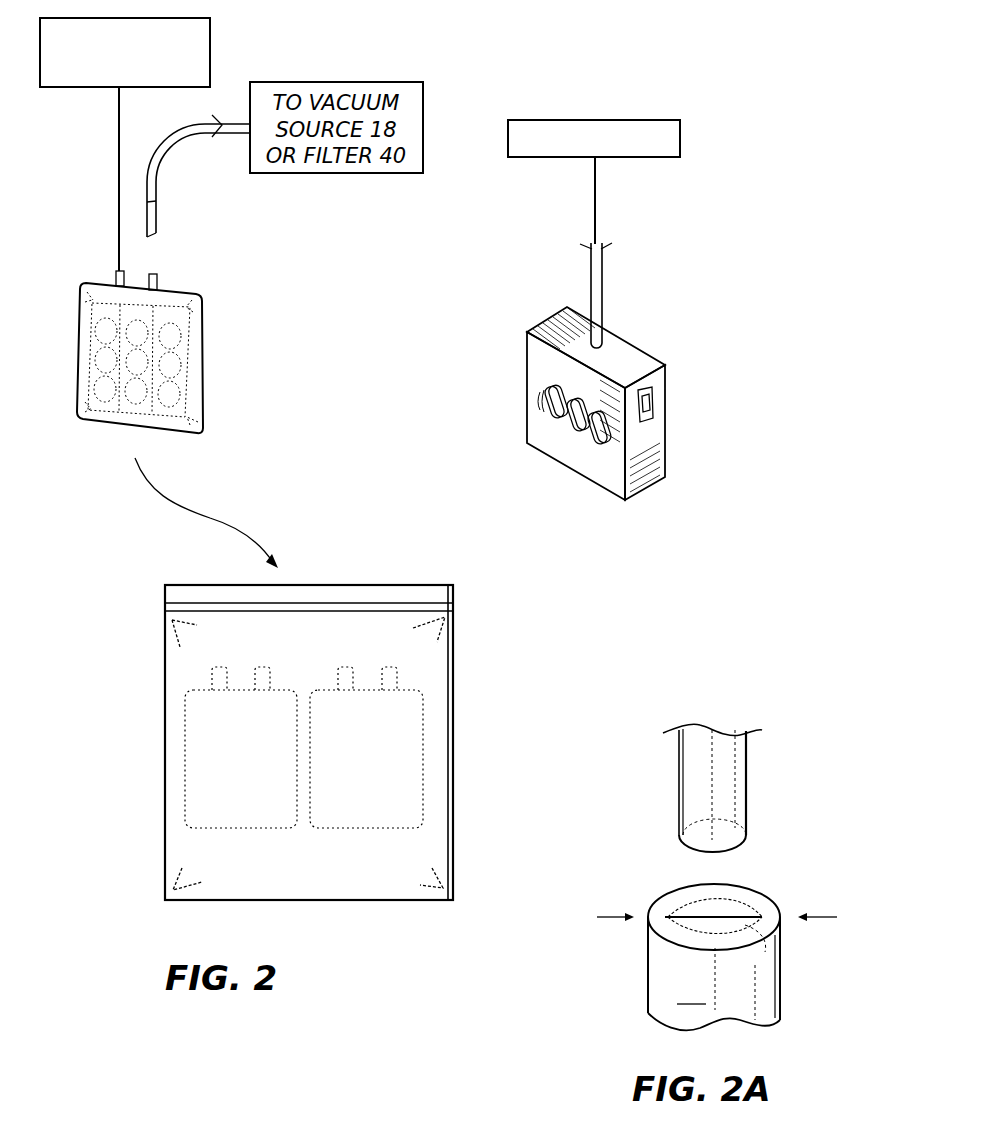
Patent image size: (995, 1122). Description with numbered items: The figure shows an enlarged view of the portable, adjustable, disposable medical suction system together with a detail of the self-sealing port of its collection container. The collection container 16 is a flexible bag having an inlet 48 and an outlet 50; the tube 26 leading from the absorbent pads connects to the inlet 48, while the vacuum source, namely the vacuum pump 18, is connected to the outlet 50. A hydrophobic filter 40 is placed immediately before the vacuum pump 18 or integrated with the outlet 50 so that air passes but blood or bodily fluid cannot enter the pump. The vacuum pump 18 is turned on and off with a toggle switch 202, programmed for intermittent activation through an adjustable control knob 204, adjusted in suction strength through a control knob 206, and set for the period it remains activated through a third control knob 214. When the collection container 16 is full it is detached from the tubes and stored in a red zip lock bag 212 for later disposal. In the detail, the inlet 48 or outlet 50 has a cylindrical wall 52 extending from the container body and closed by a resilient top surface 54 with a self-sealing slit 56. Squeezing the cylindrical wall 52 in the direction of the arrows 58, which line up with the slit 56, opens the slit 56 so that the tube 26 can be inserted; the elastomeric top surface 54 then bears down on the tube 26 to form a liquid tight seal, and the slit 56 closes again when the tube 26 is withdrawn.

In FIG. 2, the collection container 16 is at (280, 316).
In FIG. 2, the vacuum pump 18 is at (480, 400).
In FIG. 2, the tube 26 is at (125, 144).
In FIG. 2A, the tube 26 is at (729, 783).
In FIG. 2, the filter 40 is at (681, 141).
In FIG. 2, the inlet 48 is at (118, 270).
In FIG. 2A, the inlet 48 is at (767, 957).
In FIG. 2, the outlet 50 is at (160, 280).
In FIG. 2A, the outlet 50 is at (767, 957).
In FIG. 2A, the cylindrical wall 52 is at (692, 992).
In FIG. 2A, the top surface 54 is at (760, 936).
In FIG. 2A, the self-sealing slit 56 is at (753, 912).
In FIG. 2A, the arrows 58 is at (600, 917).
In FIG. 2, the toggle switch 202 is at (654, 399).
In FIG. 2, the adjustable control knob 204 is at (552, 385).
In FIG. 2, the adjustable control knob 206 is at (590, 444).
In FIG. 2, the zip lock bag 212 is at (132, 693).
In FIG. 2, the third control knob 214 is at (572, 428).